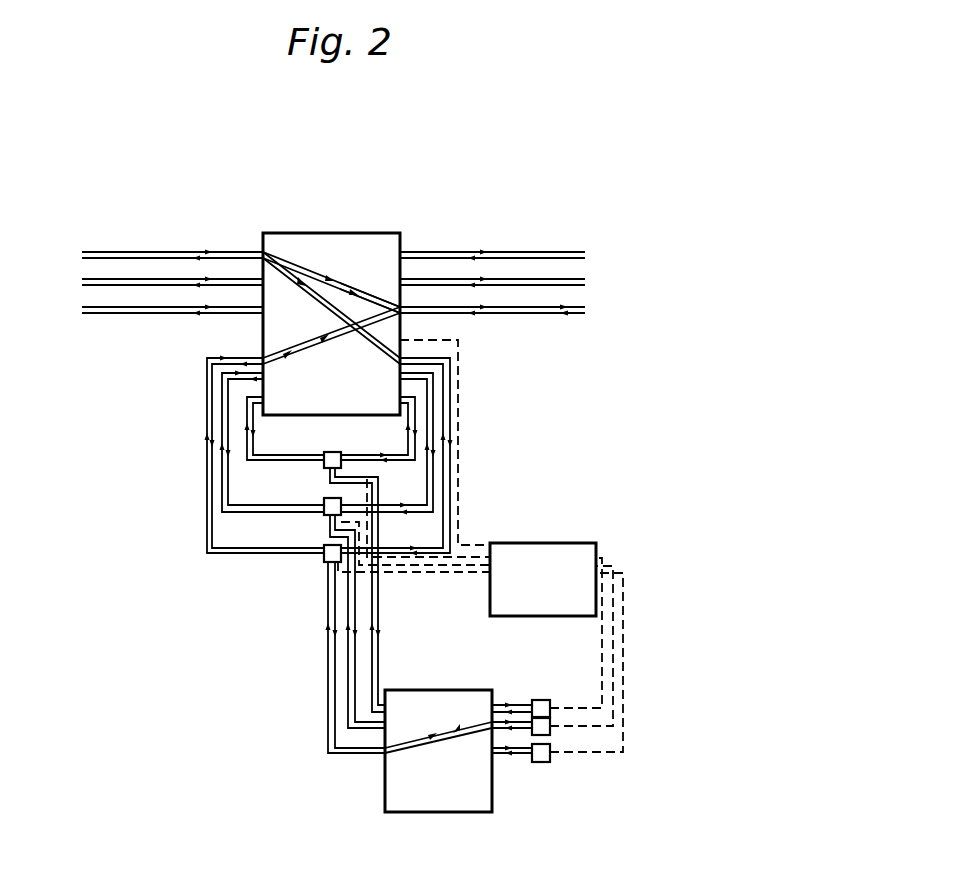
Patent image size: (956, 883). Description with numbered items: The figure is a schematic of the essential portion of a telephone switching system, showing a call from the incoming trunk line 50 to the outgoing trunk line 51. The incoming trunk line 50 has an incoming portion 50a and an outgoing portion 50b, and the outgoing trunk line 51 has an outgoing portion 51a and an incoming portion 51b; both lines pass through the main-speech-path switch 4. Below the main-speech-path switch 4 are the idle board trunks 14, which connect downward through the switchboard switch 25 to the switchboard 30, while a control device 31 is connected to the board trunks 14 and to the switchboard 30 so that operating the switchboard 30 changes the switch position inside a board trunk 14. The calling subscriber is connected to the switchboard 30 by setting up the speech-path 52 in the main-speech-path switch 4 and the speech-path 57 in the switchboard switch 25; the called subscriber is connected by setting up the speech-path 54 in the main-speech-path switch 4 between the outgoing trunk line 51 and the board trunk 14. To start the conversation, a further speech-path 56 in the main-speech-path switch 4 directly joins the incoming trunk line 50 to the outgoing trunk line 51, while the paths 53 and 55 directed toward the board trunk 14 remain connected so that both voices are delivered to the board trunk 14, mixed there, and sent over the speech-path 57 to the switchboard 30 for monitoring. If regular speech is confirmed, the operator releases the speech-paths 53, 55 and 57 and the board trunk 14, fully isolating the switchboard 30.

The main-speech-path switch 4 is at (334, 241).
The board trunk 14 is at (323, 561).
The switchboard switch 25 is at (436, 812).
The switchboard 30 is at (538, 763).
The control device 31 is at (540, 527).
The incoming trunk line 50 is at (133, 253).
The incoming portion 50a is at (90, 252).
The outgoing portion 50b is at (88, 259).
The outgoing trunk line 51 is at (570, 316).
The outgoing portion 51a is at (587, 307).
The incoming portion 51b is at (586, 314).
The speech-path 52 is at (295, 277).
The speech-path 53 is at (313, 280).
The speech-path 54 is at (292, 352).
The speech-path 55 is at (327, 338).
The speech-path 56 is at (368, 298).
The speech-path 57 is at (455, 733).